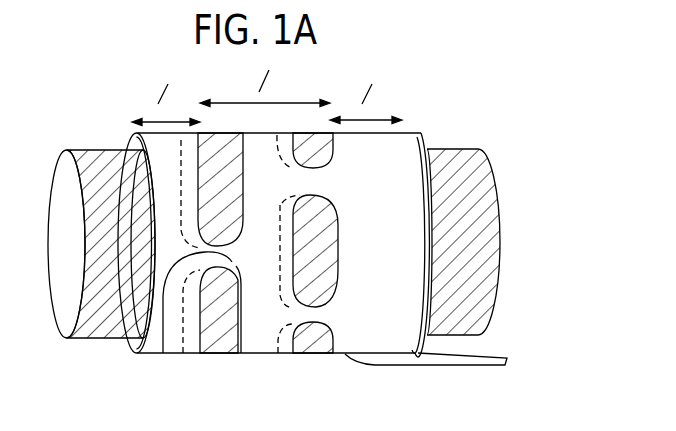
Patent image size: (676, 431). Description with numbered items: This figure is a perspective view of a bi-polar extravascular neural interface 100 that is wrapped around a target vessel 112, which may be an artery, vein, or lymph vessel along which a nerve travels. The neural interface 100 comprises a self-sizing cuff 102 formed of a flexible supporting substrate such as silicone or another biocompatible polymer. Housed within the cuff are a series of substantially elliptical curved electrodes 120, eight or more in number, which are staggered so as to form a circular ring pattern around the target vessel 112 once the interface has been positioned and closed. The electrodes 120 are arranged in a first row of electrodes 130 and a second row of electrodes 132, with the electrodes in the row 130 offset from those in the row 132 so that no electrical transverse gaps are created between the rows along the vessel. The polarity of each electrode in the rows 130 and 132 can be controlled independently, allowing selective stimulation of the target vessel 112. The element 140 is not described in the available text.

The neural interface 100 is at (66, 112).
The self-sizing cuff 102 is at (402, 135).
The target vessel 112 is at (493, 228).
The electrodes 120 is at (341, 211).
The first row of electrodes 130 is at (217, 340).
The second row of electrodes 132 is at (310, 345).
The end opening 140 is at (163, 342).